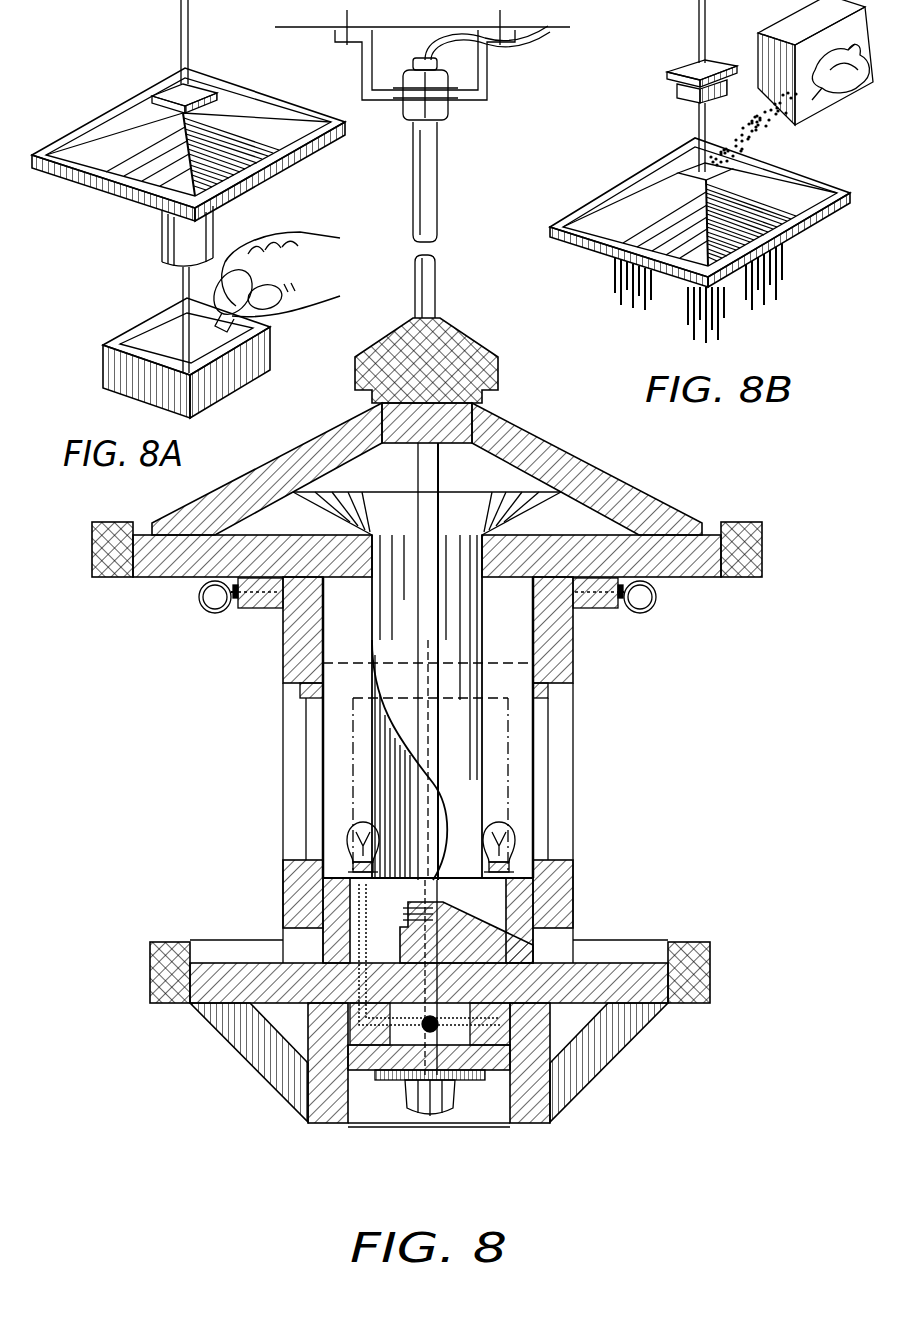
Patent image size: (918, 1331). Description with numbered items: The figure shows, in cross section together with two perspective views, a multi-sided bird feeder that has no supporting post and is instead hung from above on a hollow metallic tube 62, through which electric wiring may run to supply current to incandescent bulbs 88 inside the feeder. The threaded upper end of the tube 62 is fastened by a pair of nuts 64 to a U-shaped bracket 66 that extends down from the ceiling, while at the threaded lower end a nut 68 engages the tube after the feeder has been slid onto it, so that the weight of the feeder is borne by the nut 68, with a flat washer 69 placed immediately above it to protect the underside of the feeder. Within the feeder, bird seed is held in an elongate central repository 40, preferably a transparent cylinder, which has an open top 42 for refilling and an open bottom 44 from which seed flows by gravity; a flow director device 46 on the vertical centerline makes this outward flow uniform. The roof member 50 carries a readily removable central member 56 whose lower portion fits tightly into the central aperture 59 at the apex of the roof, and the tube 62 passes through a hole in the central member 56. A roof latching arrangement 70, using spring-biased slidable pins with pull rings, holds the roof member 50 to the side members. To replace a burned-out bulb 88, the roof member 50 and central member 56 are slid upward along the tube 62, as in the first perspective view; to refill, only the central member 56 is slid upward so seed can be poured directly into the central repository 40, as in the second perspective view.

In FIG. 8, the central repository 40 is at (372, 746).
In FIG. 8A, the central repository 40 is at (162, 240).
In FIG. 8, the open top 42 is at (460, 533).
In FIG. 8, the open bottom 44 is at (467, 876).
In FIG. 8, the flow director device 46 is at (560, 903).
In FIG. 8A, the roof member 50 is at (270, 110).
In FIG. 8B, the roof member 50 is at (622, 194).
In FIG. 8, the central member 56 is at (458, 338).
In FIG. 8A, the central member 56 is at (200, 88).
In FIG. 8B, the central member 56 is at (670, 84).
In FIG. 8, the central aperture 59 is at (378, 445).
In FIG. 8, the hollow metallic tube 62 is at (437, 182).
In FIG. 8B, the hollow metallic tube 62 is at (698, 28).
In FIG. 8, the nuts 64 is at (449, 116).
In FIG. 8, the U-shaped bracket 66 is at (484, 84).
In FIG. 8, the nut 68 is at (407, 1105).
In FIG. 8, the flat washer 69 is at (470, 1082).
In FIG. 8, the roof latching arrangement 70 is at (172, 630).
In FIG. 8, the incandescent bulbs 88 is at (347, 828).
In FIG. 8A, the incandescent bulbs 88 is at (228, 268).